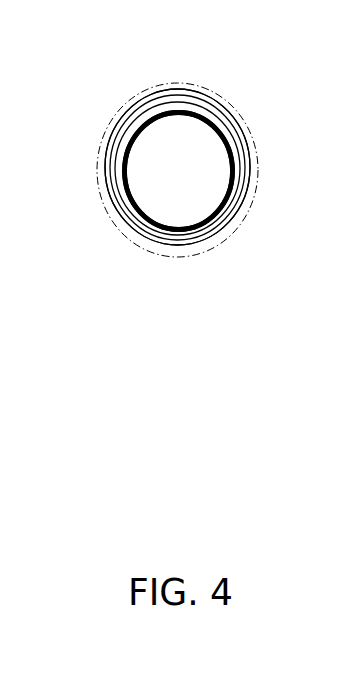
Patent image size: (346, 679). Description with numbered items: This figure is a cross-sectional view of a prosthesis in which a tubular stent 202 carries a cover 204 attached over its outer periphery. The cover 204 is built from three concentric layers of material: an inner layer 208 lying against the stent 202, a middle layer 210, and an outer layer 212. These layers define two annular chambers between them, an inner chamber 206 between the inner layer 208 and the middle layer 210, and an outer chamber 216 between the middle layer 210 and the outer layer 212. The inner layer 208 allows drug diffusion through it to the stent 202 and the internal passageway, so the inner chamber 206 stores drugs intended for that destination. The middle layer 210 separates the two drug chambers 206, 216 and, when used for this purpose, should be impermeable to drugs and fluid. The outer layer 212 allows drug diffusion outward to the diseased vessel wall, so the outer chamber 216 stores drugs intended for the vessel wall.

The tubular stent 202 is at (187, 248).
The cover 204 is at (257, 96).
The inner chamber 206 is at (125, 138).
The inner layer 208 is at (240, 160).
The middle layer 210 is at (215, 231).
The outer layer 212 is at (193, 85).
The outer chamber 216 is at (141, 238).